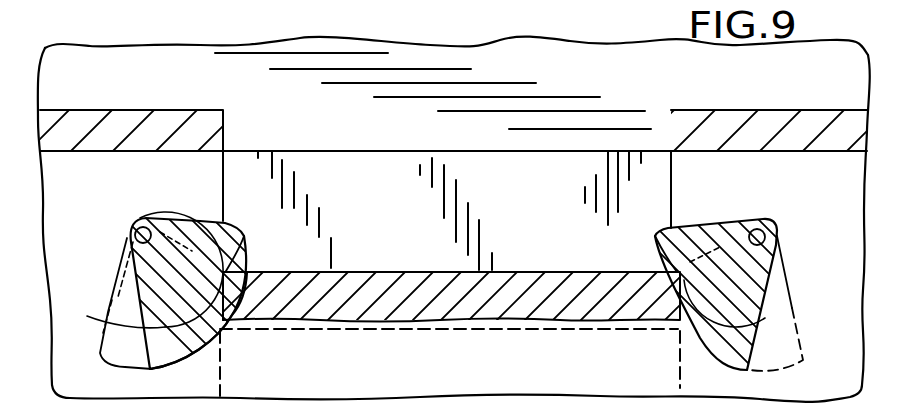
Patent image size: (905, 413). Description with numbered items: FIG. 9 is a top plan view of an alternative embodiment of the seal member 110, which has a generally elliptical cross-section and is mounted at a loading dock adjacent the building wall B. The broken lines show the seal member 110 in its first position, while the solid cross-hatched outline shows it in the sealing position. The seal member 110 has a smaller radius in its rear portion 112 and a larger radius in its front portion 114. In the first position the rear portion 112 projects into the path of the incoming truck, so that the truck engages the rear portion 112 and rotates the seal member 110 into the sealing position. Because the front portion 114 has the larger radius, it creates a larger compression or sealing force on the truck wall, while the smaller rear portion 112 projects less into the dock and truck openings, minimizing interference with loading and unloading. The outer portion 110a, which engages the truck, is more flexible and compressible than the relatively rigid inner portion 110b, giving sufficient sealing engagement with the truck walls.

The building wall B is at (768, 125).
The seal member 110 is at (215, 262).
The outer portion 110a is at (133, 357).
The inner portion 110b is at (227, 263).
The rear portion 112 is at (203, 243).
The front portion 114 is at (113, 320).